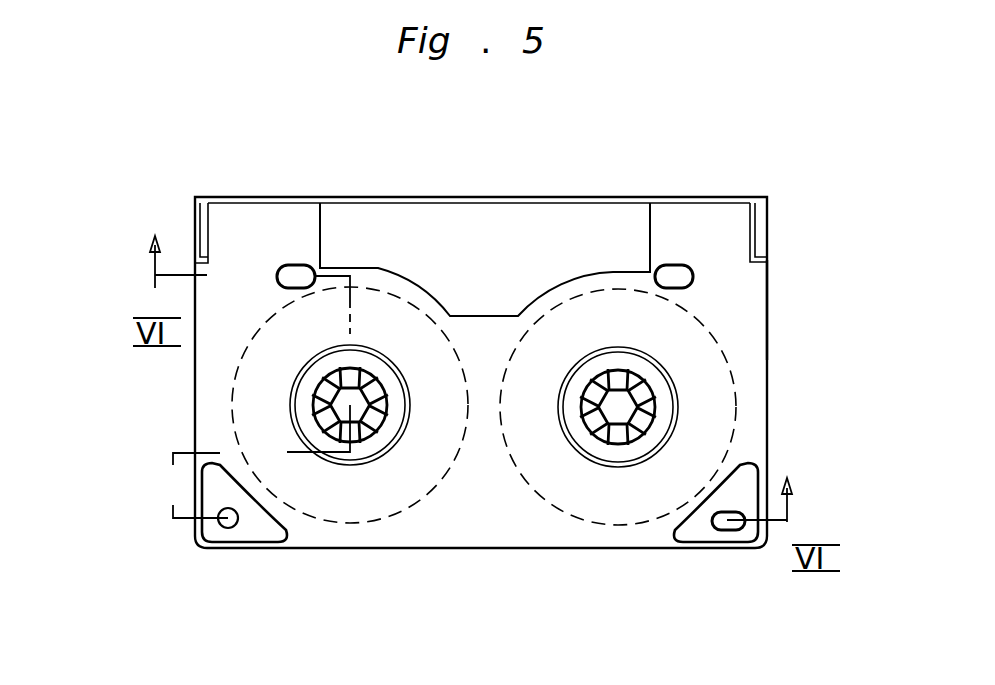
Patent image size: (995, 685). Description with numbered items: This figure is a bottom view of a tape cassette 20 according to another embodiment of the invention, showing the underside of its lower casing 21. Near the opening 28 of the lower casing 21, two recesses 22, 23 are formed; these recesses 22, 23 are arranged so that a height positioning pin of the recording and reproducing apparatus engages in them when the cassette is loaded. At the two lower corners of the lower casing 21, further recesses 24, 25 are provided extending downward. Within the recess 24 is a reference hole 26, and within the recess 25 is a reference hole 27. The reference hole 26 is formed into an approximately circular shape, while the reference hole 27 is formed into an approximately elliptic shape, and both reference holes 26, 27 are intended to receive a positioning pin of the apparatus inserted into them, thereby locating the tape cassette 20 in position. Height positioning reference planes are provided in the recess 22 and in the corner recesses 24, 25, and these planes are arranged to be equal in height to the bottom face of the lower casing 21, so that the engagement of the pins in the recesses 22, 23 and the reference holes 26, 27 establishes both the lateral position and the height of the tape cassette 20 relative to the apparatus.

The tape cassette 20 is at (768, 385).
The lower casing 21 is at (753, 313).
The recess 22 is at (275, 268).
The recess 23 is at (677, 278).
The recess 24 is at (218, 487).
The recess 25 is at (747, 487).
The reference hole 26 is at (232, 527).
The reference hole 27 is at (727, 524).
The opening 28 is at (468, 220).